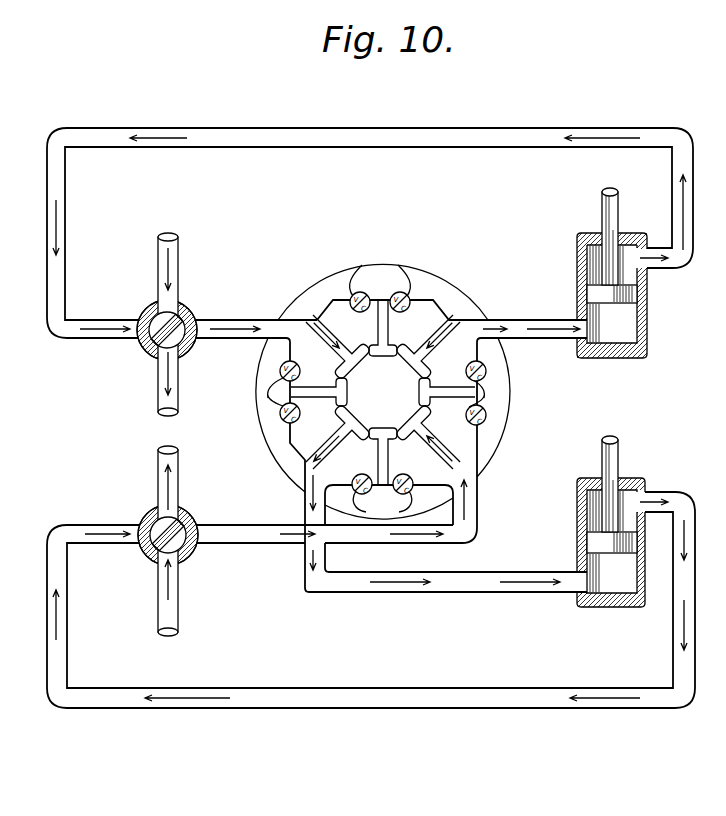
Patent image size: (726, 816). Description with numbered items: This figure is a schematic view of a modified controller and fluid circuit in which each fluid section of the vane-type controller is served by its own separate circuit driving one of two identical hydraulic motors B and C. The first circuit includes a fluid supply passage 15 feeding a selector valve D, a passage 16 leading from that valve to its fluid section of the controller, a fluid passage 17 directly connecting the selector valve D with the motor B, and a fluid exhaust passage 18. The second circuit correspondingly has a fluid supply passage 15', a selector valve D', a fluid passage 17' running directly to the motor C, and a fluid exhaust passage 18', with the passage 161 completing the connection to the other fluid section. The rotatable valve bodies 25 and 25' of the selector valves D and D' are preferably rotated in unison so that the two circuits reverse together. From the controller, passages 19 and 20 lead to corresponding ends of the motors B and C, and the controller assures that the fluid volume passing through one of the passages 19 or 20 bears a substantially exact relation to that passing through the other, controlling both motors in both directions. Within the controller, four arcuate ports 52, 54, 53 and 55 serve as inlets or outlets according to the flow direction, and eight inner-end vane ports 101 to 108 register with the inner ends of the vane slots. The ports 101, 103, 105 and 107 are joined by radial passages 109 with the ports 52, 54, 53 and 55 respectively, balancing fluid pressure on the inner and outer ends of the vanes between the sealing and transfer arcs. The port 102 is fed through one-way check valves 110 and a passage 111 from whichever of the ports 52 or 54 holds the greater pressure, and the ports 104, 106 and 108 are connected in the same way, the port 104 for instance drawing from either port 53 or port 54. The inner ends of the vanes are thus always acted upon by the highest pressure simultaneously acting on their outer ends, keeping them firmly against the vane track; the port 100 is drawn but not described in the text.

The fluid passage 17 is at (370, 233).
The fluid passage 17' is at (370, 600).
The fluid supply passage 15 is at (185, 281).
The fluid supply passage 15' is at (186, 490).
The fluid exhaust passage 18 is at (182, 373).
The fluid exhaust passage 18' is at (186, 585).
The selector valve D is at (175, 317).
The selector valve D' is at (178, 525).
The rotatable valve body 25 is at (185, 335).
The rotatable valve body 25' is at (152, 549).
The passage 16 is at (236, 321).
The passage 19 is at (540, 321).
The passage 20 is at (505, 573).
The supply conduit 161 is at (282, 524).
The port 52 is at (313, 300).
The port 54 is at (446, 304).
The port 55 is at (303, 458).
The port 53 is at (492, 445).
The one-way check valve 110 is at (410, 264).
The passage 111 is at (382, 392).
The channel 100 is at (445, 356).
The port 101 is at (335, 342).
The port 102 is at (383, 338).
The port 103 is at (433, 342).
The port 104 is at (431, 392).
The port 105 is at (433, 442).
The port 106 is at (383, 447).
The port 107 is at (333, 442).
The port 108 is at (337, 392).
The radial passage 109 is at (380, 398).
The hydraulic motor B is at (612, 273).
The hydraulic motor C is at (606, 520).